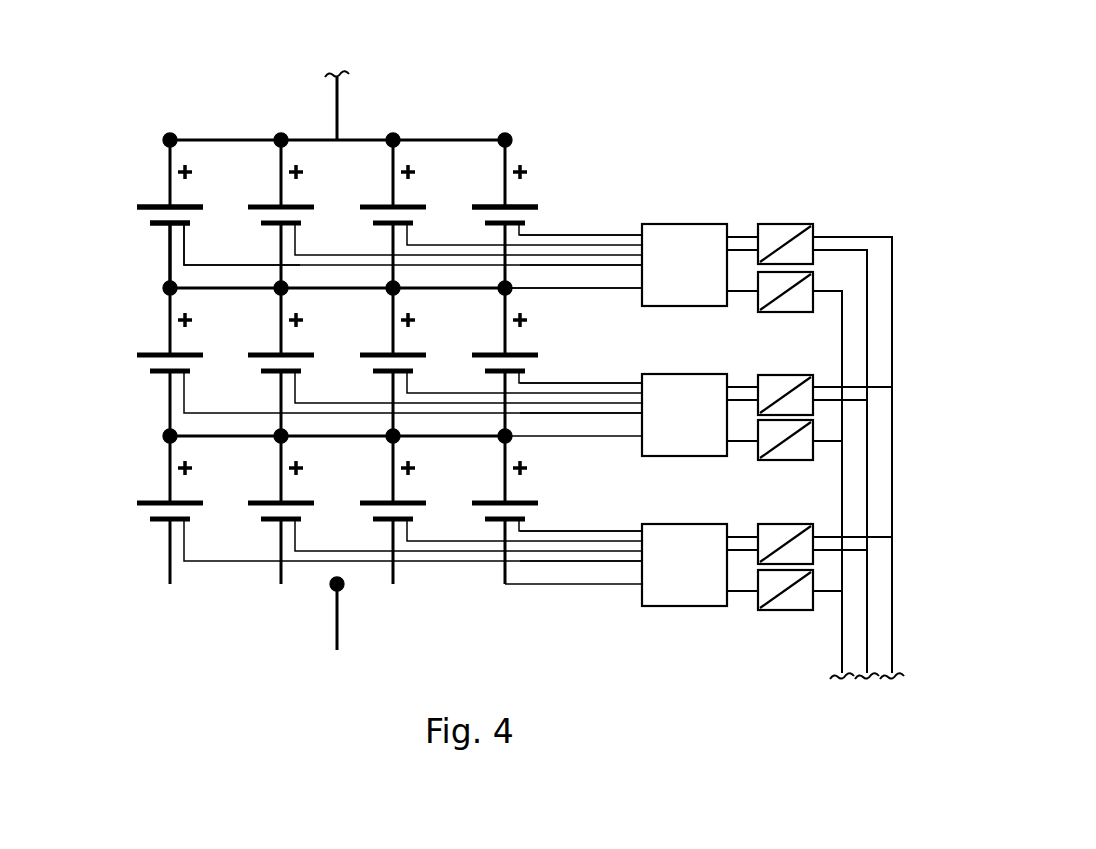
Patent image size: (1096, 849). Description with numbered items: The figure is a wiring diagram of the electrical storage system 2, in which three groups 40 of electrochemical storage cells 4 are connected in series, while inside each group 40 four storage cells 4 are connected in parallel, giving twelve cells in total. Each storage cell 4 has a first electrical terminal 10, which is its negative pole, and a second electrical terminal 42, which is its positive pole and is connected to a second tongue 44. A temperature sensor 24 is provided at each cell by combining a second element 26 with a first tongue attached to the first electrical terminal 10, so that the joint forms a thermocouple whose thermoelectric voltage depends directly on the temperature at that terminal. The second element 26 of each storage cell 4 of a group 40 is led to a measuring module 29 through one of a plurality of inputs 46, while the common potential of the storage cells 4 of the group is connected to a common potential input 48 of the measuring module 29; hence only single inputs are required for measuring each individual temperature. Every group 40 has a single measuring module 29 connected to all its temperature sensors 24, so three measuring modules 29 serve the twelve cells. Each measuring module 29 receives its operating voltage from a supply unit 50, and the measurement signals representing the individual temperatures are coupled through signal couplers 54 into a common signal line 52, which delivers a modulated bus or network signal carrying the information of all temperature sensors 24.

The electrical storage system 2 is at (488, 100).
The storage cell 4 is at (202, 192).
The first electrical terminal 10 is at (150, 228).
The temperature sensor 24 is at (205, 242).
The second element 26 is at (176, 230).
The measuring module 29 is at (708, 233).
The group 40 is at (72, 215).
The second electrical terminal 42 is at (143, 205).
The second tongue 44 is at (508, 192).
The inputs 46 is at (606, 399).
The common potential input 48 is at (656, 290).
The supply unit 50 is at (786, 232).
The common signal line 52 is at (840, 660).
The signal coupler 54 is at (806, 304).